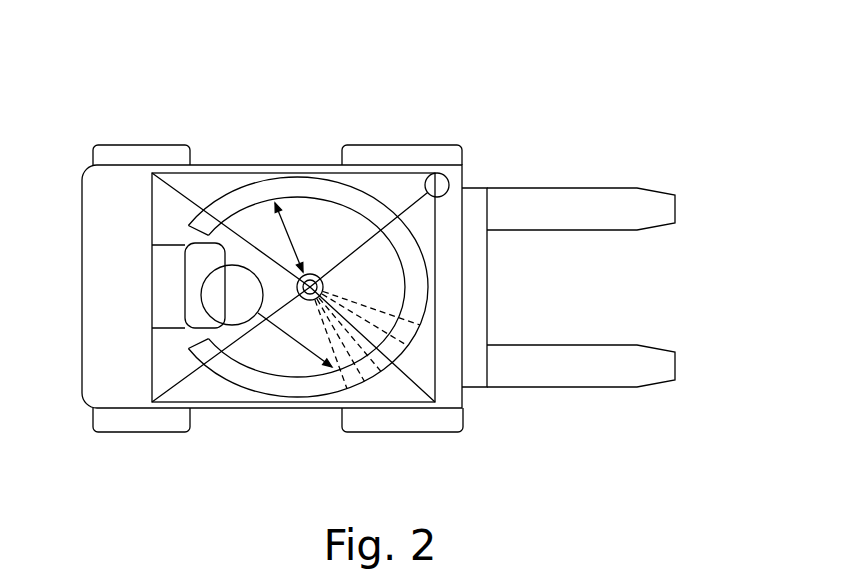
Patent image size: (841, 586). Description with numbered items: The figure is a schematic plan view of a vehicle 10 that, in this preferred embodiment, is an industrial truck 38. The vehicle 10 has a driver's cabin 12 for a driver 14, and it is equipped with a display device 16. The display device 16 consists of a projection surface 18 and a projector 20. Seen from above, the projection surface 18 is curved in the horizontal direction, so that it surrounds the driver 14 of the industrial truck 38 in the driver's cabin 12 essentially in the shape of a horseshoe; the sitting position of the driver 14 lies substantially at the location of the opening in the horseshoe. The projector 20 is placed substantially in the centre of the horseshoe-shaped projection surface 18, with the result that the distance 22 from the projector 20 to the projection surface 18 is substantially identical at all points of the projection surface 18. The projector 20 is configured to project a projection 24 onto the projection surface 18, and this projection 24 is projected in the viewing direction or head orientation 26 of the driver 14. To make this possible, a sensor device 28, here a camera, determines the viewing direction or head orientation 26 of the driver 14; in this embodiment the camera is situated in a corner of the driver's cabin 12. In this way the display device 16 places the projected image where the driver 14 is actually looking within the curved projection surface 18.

The vehicle 10 is at (378, 276).
The industrial truck 38 is at (272, 320).
The driver's cabin 12 is at (402, 404).
The driver 14 is at (203, 260).
The display device 16 is at (318, 276).
The projection surface 18 is at (290, 386).
The projector 20 is at (313, 273).
The distance 22 is at (288, 228).
The projection 24 is at (420, 325).
The viewing direction/head orientation 26 is at (280, 336).
The sensor device 28 is at (447, 177).